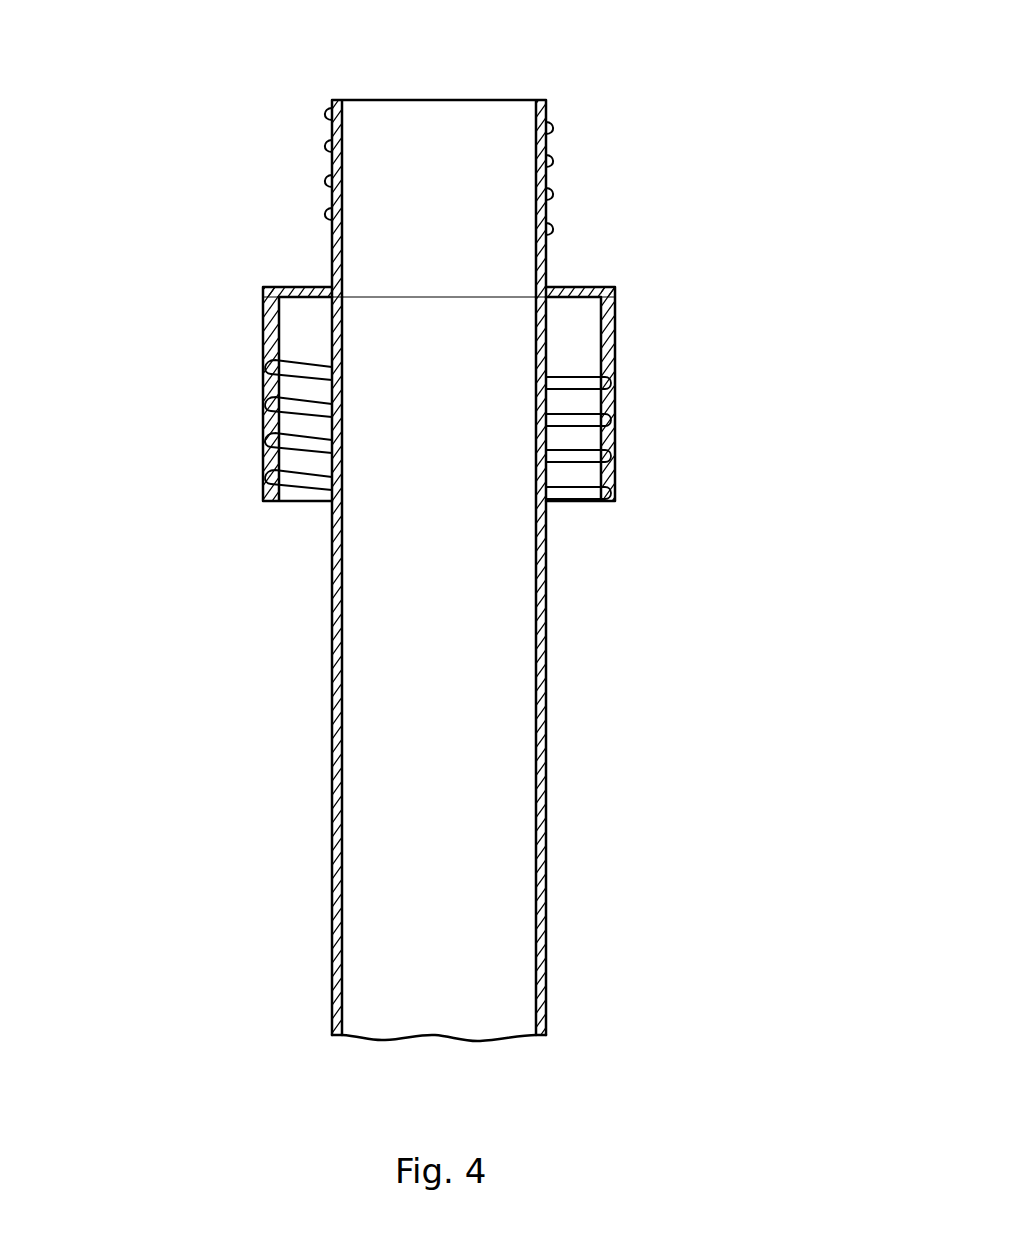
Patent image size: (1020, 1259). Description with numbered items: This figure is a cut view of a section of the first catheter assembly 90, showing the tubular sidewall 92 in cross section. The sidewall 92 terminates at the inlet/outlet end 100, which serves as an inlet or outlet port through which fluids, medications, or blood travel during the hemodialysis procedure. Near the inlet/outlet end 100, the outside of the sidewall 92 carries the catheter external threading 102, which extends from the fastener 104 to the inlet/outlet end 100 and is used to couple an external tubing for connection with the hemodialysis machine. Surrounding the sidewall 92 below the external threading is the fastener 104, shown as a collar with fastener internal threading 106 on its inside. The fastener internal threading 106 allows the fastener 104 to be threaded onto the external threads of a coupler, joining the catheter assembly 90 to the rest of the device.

The catheter assembly 90 is at (200, 401).
The sidewall 92 is at (332, 671).
The inlet/outlet end 100 is at (463, 99).
The catheter external threading 102 is at (328, 148).
The fastener 104 is at (263, 316).
The fastener internal threading 106 is at (282, 443).